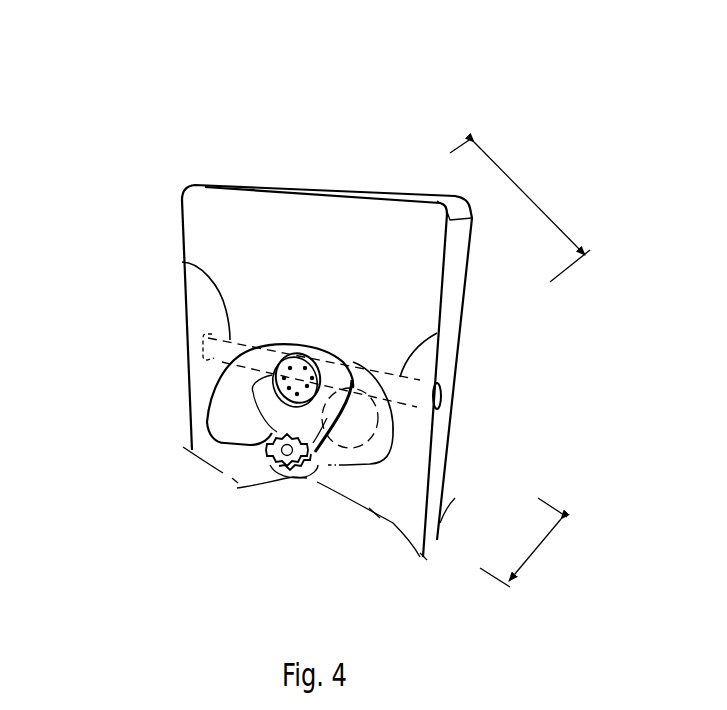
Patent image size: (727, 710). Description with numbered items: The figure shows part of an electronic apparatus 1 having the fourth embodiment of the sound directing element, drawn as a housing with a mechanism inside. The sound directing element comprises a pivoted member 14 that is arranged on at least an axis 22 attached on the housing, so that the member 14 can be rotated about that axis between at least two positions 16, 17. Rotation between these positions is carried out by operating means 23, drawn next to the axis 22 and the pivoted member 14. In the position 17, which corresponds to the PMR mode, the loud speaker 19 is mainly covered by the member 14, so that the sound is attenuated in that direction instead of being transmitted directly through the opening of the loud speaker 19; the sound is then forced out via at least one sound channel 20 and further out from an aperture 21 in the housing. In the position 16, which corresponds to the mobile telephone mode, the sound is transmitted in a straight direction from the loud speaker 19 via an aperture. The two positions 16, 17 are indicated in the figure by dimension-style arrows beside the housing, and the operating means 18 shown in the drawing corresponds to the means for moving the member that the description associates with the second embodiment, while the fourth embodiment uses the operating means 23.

The device housing 1 is at (467, 64).
The pivoted member 14 is at (217, 422).
The position 16 is at (527, 191).
The position 17 is at (537, 552).
The operating means 18 is at (323, 457).
The loud speaker 19 is at (296, 366).
The sound channel 20 is at (182, 262).
The aperture 21 is at (200, 347).
The axis 22 is at (277, 460).
The operating means 23 is at (310, 477).